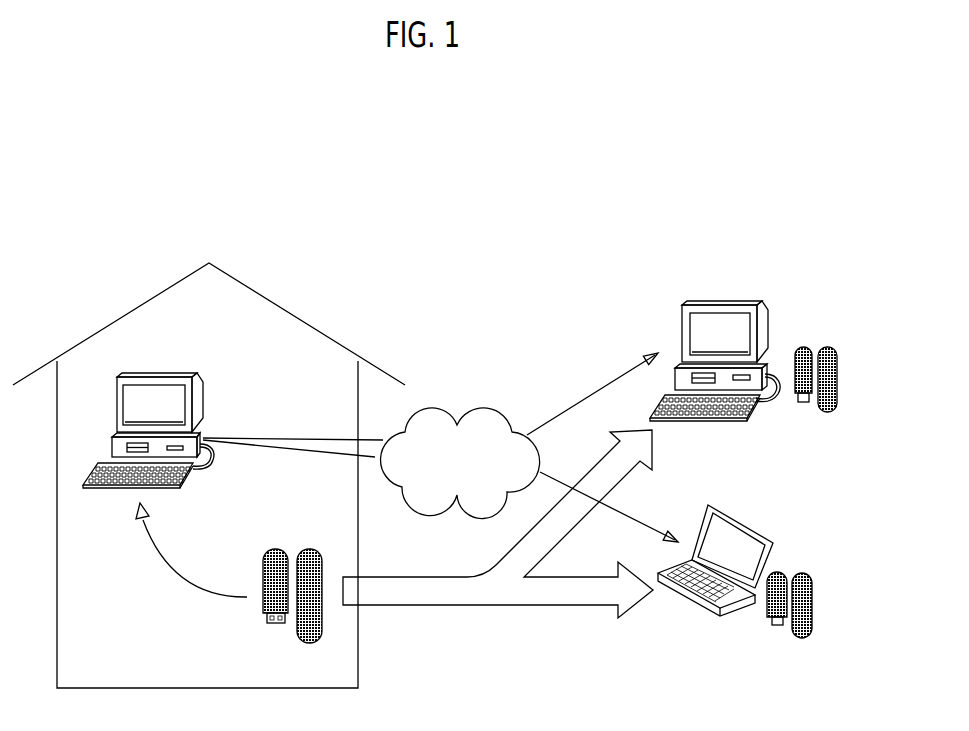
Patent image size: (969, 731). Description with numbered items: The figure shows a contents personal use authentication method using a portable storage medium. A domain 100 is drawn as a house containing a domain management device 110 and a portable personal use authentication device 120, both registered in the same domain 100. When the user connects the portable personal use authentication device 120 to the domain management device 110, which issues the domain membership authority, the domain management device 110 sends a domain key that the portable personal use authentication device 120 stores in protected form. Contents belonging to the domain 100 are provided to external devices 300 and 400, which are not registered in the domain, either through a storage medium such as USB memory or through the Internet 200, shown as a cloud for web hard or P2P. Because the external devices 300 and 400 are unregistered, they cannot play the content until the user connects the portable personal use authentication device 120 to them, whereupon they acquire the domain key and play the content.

The domain 100 is at (288, 310).
The domain management device 110 is at (165, 374).
The portable personal use authentication device 120 is at (263, 615).
The Internet 200 is at (438, 405).
The external device 300 is at (728, 305).
The external device 400 is at (743, 522).